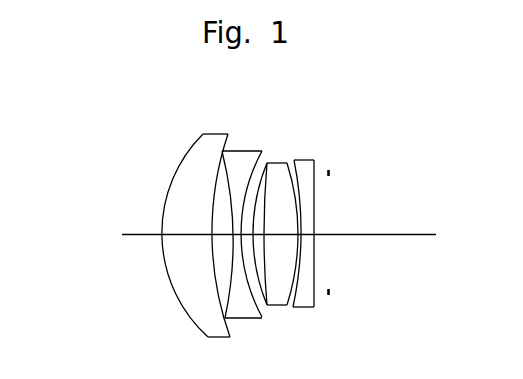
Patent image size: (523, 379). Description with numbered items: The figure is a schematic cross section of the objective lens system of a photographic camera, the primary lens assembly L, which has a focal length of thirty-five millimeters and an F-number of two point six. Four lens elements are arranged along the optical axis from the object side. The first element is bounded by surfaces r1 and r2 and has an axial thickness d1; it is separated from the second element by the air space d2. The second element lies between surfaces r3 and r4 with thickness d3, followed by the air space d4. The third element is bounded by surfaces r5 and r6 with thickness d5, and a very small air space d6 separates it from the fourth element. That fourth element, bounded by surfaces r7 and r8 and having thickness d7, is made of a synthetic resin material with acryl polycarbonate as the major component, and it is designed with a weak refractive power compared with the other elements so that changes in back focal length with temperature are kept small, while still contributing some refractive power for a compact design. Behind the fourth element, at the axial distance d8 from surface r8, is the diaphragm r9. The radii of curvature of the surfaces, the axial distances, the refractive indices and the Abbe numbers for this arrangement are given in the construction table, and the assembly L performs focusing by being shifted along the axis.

The primary lens assembly L is at (277, 120).
The first surface r1 is at (184, 312).
The second surface r2 is at (226, 326).
The third surface r3 is at (228, 319).
The fourth surface r4 is at (260, 306).
The fifth surface r5 is at (264, 290).
The sixth surface r6 is at (292, 298).
The seventh surface r7 is at (296, 298).
The eighth surface r8 is at (314, 296).
The diaphragm r9 is at (331, 292).
The axial thickness of first lens element d1 is at (187, 235).
The axial air space between first and second lens elements d2 is at (222, 235).
The axial thickness of second lens element d3 is at (235, 238).
The axial air space between second and third lens elements d4 is at (255, 222).
The axial thickness of third lens element d5 is at (275, 225).
The axial air space between third and fourth lens elements d6 is at (300, 228).
The axial thickness of fourth lens element d7 is at (306, 232).
The axial air space between fourth lens element and diaphragm d8 is at (318, 235).